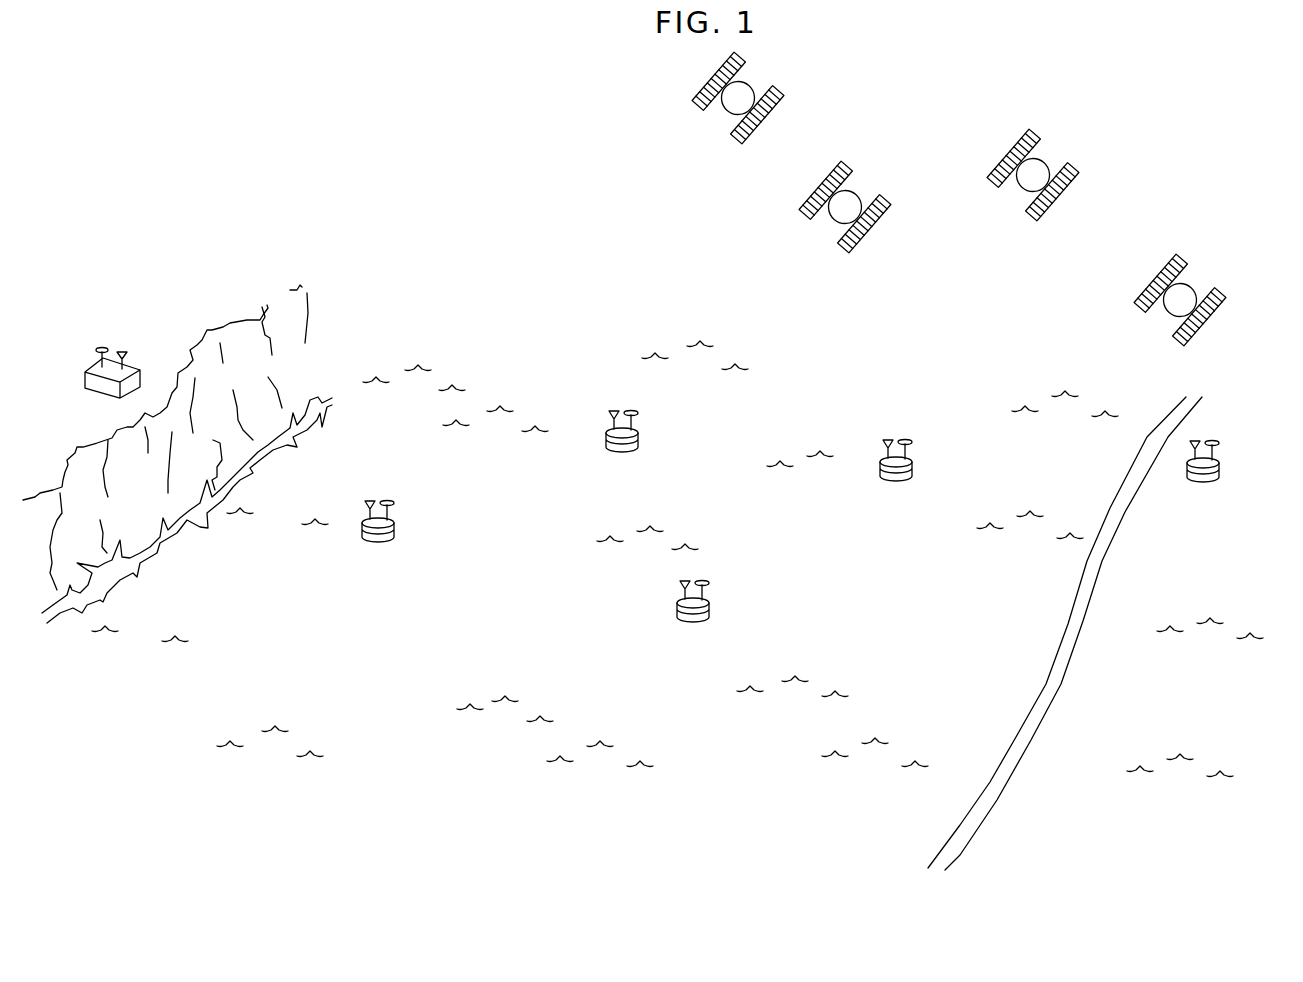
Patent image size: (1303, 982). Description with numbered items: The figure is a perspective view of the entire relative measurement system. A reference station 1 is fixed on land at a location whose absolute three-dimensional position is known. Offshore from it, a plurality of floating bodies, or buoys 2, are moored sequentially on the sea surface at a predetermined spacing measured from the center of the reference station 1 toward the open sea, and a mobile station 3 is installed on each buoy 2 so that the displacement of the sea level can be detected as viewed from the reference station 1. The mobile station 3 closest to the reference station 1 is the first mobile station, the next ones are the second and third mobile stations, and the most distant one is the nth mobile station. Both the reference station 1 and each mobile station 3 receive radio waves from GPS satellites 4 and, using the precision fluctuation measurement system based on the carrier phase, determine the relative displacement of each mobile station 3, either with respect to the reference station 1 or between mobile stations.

The reference station 1 is at (146, 353).
The floating body (buoy) 2 is at (380, 548).
The mobile station 3 is at (829, 527).
The GPS satellite 4 is at (733, 106).